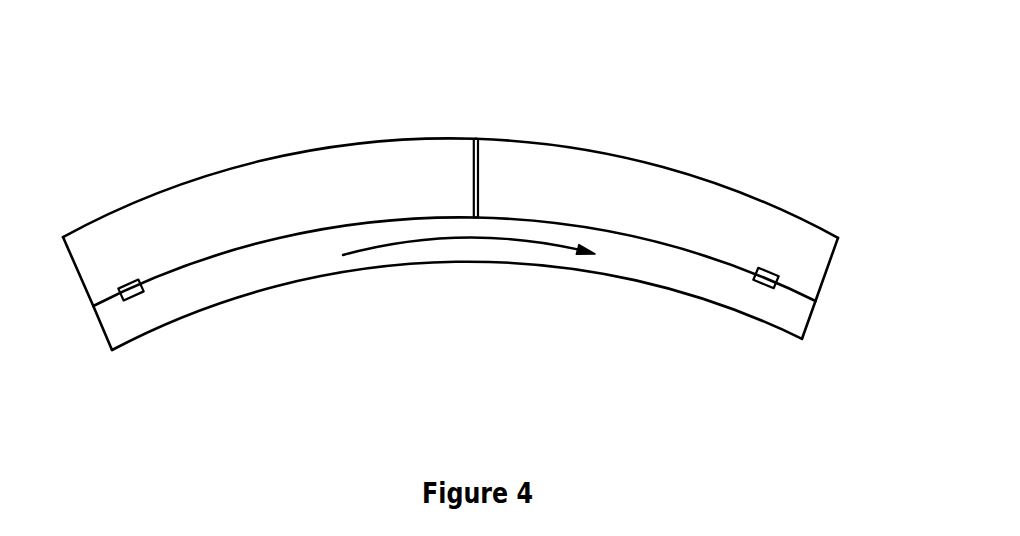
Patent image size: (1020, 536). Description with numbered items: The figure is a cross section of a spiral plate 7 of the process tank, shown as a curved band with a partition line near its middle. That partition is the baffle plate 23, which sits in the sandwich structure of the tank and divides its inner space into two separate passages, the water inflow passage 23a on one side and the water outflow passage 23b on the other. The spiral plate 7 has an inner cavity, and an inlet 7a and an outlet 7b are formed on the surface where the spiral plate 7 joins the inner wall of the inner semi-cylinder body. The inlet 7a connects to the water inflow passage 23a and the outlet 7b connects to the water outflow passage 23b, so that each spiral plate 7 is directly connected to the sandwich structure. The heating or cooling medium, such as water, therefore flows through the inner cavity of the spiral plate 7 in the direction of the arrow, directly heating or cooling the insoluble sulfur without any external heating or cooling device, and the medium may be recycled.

The spiral plate 7 is at (602, 273).
The inlet 7a is at (128, 285).
The outlet 7b is at (772, 277).
The baffle plate 23 is at (477, 140).
The water inflow passage 23a is at (347, 168).
The water outflow passage 23b is at (675, 202).